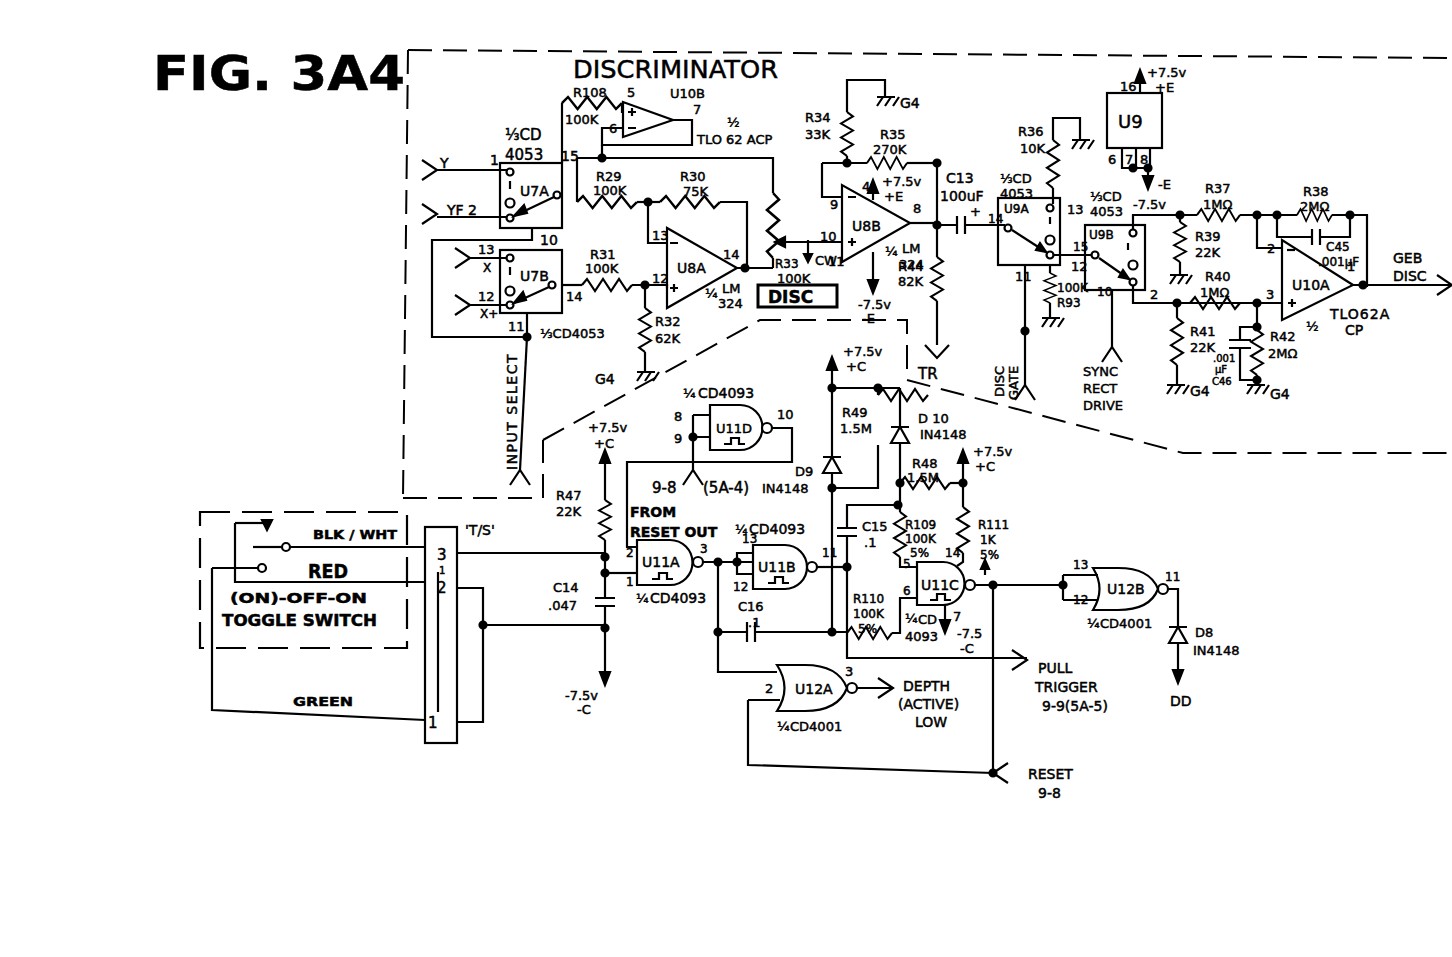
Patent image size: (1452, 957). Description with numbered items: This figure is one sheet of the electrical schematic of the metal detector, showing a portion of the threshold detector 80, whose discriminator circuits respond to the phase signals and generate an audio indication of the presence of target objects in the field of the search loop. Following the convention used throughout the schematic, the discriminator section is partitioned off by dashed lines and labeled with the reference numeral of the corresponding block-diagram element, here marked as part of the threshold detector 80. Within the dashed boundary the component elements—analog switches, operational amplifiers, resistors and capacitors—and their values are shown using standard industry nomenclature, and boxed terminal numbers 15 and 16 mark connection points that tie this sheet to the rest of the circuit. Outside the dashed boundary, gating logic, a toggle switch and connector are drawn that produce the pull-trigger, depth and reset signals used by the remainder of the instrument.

The threshold detector 80 is at (405, 203).
The connector terminal 15 is at (937, 163).
The connector terminal 16 is at (1025, 331).